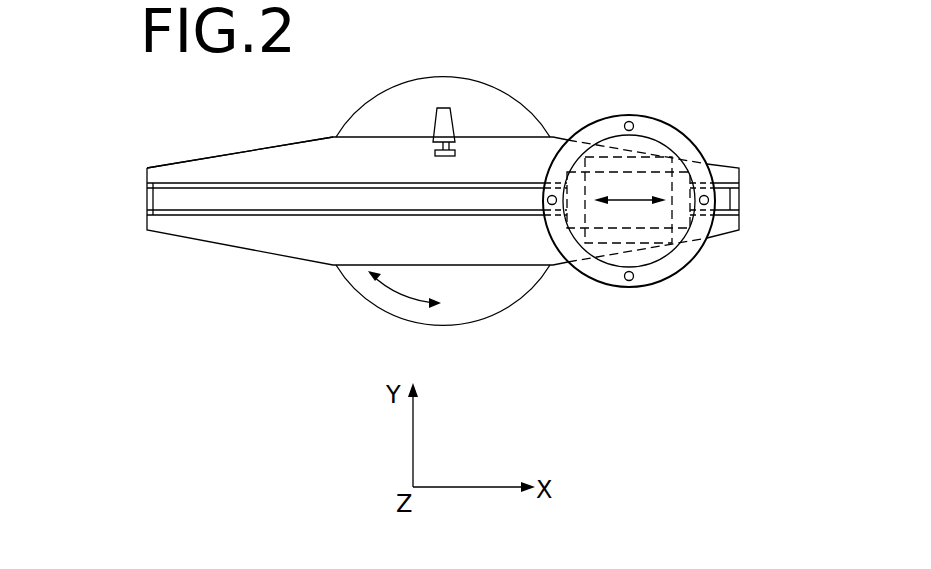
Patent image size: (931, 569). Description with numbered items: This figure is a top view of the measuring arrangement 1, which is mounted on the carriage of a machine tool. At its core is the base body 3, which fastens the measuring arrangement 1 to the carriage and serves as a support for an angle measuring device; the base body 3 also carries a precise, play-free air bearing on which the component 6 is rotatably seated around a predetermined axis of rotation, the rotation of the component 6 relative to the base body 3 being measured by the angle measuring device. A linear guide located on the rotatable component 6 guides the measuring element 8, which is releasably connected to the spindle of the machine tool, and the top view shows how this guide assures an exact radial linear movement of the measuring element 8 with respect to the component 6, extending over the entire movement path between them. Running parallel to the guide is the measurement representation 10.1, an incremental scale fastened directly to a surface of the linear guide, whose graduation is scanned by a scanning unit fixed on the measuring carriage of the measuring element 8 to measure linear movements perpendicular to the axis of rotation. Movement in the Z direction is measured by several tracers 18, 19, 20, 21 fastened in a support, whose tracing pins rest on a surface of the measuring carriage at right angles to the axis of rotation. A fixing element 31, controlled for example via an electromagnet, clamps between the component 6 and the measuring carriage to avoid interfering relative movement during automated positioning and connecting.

The measuring arrangement 1 is at (323, 290).
The base body 3 is at (372, 113).
The component 6 is at (233, 165).
The measuring element 8 is at (694, 262).
The measurement representation 10.1 is at (180, 207).
The tracer 18 is at (553, 207).
The tracer 19 is at (706, 195).
The tracer 20 is at (632, 122).
The tracer 21 is at (630, 281).
The fixing element 31 is at (447, 131).